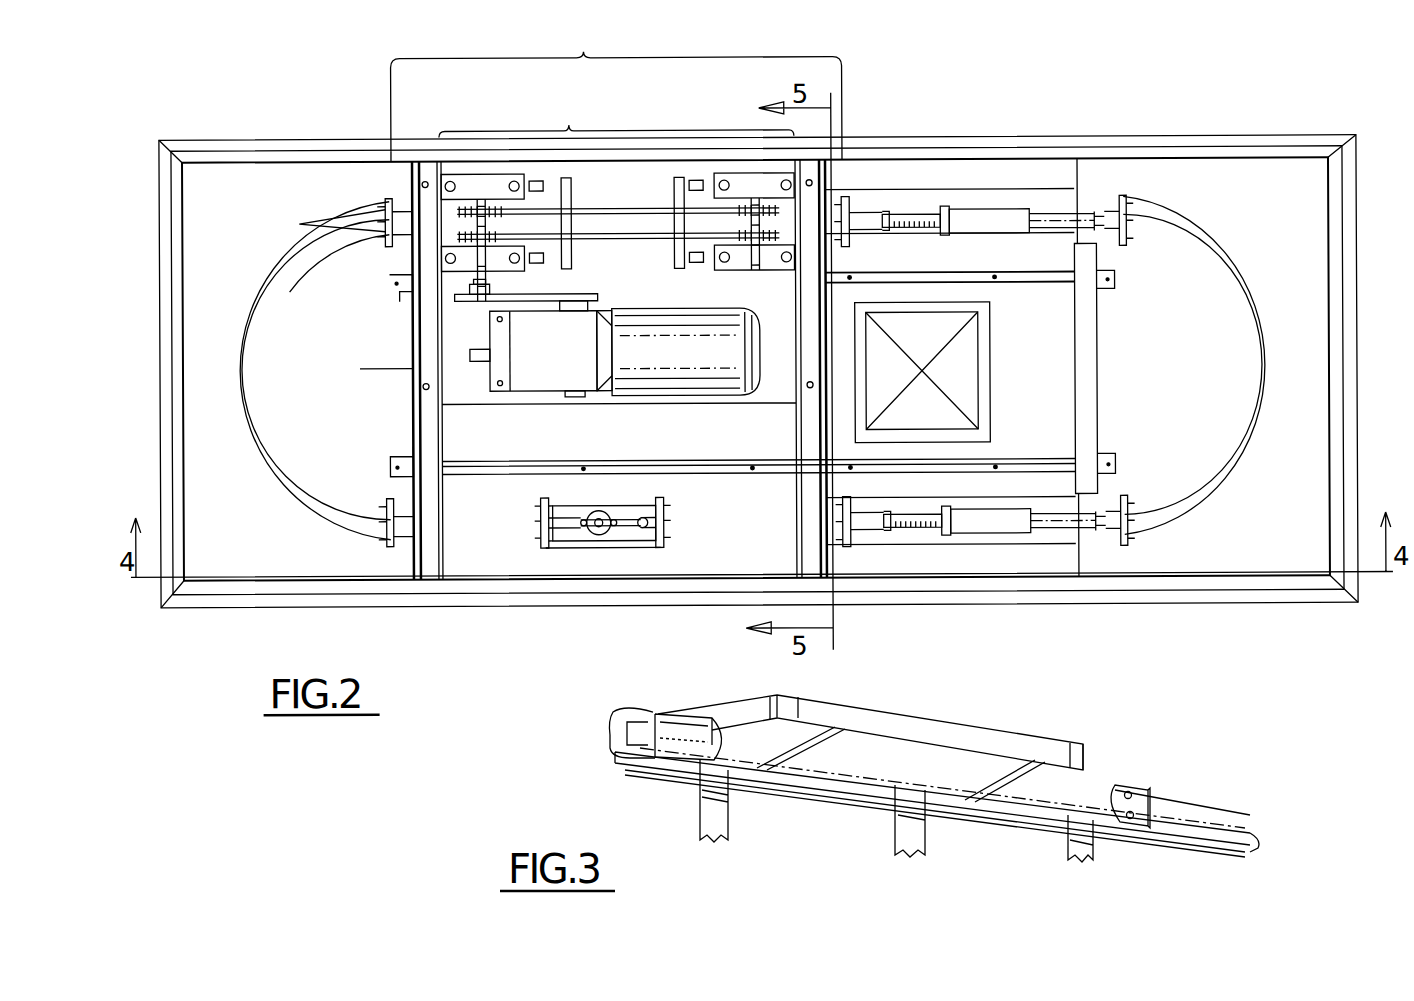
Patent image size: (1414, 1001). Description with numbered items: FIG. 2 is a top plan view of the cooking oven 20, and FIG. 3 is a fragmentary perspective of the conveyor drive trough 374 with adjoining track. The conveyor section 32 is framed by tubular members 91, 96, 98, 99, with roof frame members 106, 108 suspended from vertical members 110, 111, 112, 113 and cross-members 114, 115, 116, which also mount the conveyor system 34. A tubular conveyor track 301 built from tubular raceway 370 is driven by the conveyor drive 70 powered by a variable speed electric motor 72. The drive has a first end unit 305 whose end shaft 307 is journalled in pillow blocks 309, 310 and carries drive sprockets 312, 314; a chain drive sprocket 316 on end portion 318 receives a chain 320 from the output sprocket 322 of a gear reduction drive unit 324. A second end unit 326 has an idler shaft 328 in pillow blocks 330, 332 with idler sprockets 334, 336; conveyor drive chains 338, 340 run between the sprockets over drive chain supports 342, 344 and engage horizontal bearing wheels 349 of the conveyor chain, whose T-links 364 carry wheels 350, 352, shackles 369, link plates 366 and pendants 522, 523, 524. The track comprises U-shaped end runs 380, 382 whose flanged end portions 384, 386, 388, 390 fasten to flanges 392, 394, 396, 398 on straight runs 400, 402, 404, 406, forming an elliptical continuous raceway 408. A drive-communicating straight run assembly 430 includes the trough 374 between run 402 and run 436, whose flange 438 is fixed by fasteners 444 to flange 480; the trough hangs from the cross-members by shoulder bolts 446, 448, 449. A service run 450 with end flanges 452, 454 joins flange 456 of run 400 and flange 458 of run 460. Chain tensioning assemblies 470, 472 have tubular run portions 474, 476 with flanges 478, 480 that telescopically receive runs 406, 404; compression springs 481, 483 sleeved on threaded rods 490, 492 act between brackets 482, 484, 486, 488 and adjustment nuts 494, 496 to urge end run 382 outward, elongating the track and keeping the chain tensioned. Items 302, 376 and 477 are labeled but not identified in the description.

In FIG. 2, the cooking oven 20 is at (1404, 59).
In FIG. 2, the conveyor section 32 is at (160, 168).
In FIG. 2, the conveyor system 34 is at (322, 160).
In FIG. 3, the conveyor system 34 is at (695, 704).
In FIG. 2, the conveyor drive system 70 is at (616, 116).
In FIG. 2, the variable speed electric motor 72 is at (700, 356).
In FIG. 2, the tubular member 91 is at (172, 375).
In FIG. 2, the tubular member 96 is at (1340, 305).
In FIG. 2, the tubular member 98 is at (270, 597).
In FIG. 2, the tubular member 99 is at (200, 148).
In FIG. 2, the roof frame member 106 is at (826, 393).
In FIG. 2, the roof frame member 108 is at (975, 283).
In FIG. 2, the vertical member 110 is at (398, 452).
In FIG. 2, the vertical member 111 is at (1112, 455).
In FIG. 2, the vertical member 112 is at (1115, 290).
In FIG. 2, the vertical member 113 is at (400, 292).
In FIG. 2, the cross-member 114 is at (365, 372).
In FIG. 2, the cross-member 115 is at (798, 488).
In FIG. 2, the cross-member 116 is at (1090, 340).
In FIG. 2, the tubular conveyor track 301 is at (245, 285).
In FIG. 2, the center panel 302 is at (630, 480).
In FIG. 2, the first end unit 305 is at (512, 172).
In FIG. 2, the end shaft 307 is at (480, 175).
In FIG. 2, the pillow block 309 is at (530, 175).
In FIG. 2, the pillow block 310 is at (550, 232).
In FIG. 2, the drive sprocket 312 is at (395, 240).
In FIG. 2, the drive sprocket 314 is at (385, 240).
In FIG. 2, the chain drive sprocket 316 is at (468, 293).
In FIG. 2, the end portion 318 is at (478, 294).
In FIG. 2, the chain 320 is at (533, 349).
In FIG. 2, the output sprocket 322 is at (598, 296).
In FIG. 2, the gear reduction drive unit 324 is at (548, 392).
In FIG. 2, the second end unit 326 is at (752, 172).
In FIG. 2, the idler shaft 328 is at (685, 262).
In FIG. 2, the pillow block 330 is at (700, 175).
In FIG. 2, the pillow block 332 is at (730, 272).
In FIG. 2, the idler sprocket 334 is at (905, 215).
In FIG. 2, the idler sprocket 336 is at (850, 210).
In FIG. 2, the conveyor drive chain 338 is at (585, 205).
In FIG. 2, the conveyor drive chain 340 is at (625, 240).
In FIG. 2, the drive chain support 342 is at (590, 175).
In FIG. 2, the drive chain support 344 is at (680, 178).
In FIG. 2, the horizontal conveyor chain bearing wheel 349 is at (600, 510).
In FIG. 2, the wheel 350 is at (630, 540).
In FIG. 2, the wheel 352 is at (648, 512).
In FIG. 2, the T-link 364 is at (560, 540).
In FIG. 2, the link plate 366 is at (582, 540).
In FIG. 2, the shackle 369 is at (575, 515).
In FIG. 3, the tubular raceway 370 is at (655, 725).
In FIG. 3, the conveyor drive trough 374 is at (970, 730).
In FIG. 2, the track end 376 is at (397, 160).
In FIG. 2, the U-shaped end run 380 is at (270, 482).
In FIG. 2, the U-shaped end run 382 is at (1215, 248).
In FIG. 2, the flanged end portion 384 is at (386, 520).
In FIG. 2, the flanged end portion 386 is at (386, 205).
In FIG. 2, the flanged end portion 388 is at (1128, 200).
In FIG. 2, the flanged end portion 390 is at (1135, 520).
In FIG. 2, the complementary flange 392 is at (395, 545).
In FIG. 2, the complementary flange 394 is at (396, 205).
In FIG. 2, the complementary flange 396 is at (1125, 197).
In FIG. 2, the complementary flange 398 is at (1130, 540).
In FIG. 2, the straight tubular track run 400 is at (440, 570).
In FIG. 2, the straight tubular track run 402 is at (392, 245).
In FIG. 3, the straight tubular track run 402 is at (695, 715).
In FIG. 2, the straight tubular track run 404 is at (1120, 245).
In FIG. 2, the straight tubular track run 406 is at (1124, 497).
In FIG. 3, the elliptical continuous raceway 408 is at (608, 748).
In FIG. 2, the drive-communicating straight run assembly 430 is at (616, 93).
In FIG. 3, the additional straight run portion 436 is at (1090, 795).
In FIG. 2, the flange 438 is at (785, 310).
In FIG. 2, the fasteners 444 is at (1193, 210).
In FIG. 2, the shoulder bolt 446 is at (426, 385).
In FIG. 2, the shoulder bolt 448 is at (426, 180).
In FIG. 2, the shoulder bolt 449 is at (810, 180).
In FIG. 2, the service opening straight run portion 450 is at (602, 540).
In FIG. 2, the end flange 452 is at (542, 497).
In FIG. 2, the end flange 454 is at (665, 497).
In FIG. 2, the flange 456 is at (545, 517).
In FIG. 2, the flange 458 is at (660, 540).
In FIG. 2, the straight run portion 460 is at (730, 540).
In FIG. 2, the straight run chain tensioning assembly 470 is at (940, 535).
In FIG. 2, the straight run chain tensioning assembly 472 is at (925, 215).
In FIG. 2, the tubular straight run portion 474 is at (905, 530).
In FIG. 2, the tubular straight run portion 476 is at (980, 236).
In FIG. 2, the hole 477 is at (810, 385).
In FIG. 2, the flange 478 is at (850, 497).
In FIG. 2, the flange 480 is at (848, 245).
In FIG. 2, the compression spring 481 is at (990, 500).
In FIG. 2, the bracket 482 is at (880, 530).
In FIG. 2, the compression spring 483 is at (1060, 212).
In FIG. 2, the bracket 484 is at (1090, 512).
In FIG. 2, the bracket 486 is at (950, 170).
In FIG. 2, the bracket 488 is at (1123, 197).
In FIG. 2, the threaded rod 490 is at (900, 515).
In FIG. 2, the threaded rod 492 is at (965, 210).
In FIG. 2, the adjustment nut 494 is at (920, 535).
In FIG. 2, the adjustment nut 496 is at (1030, 210).
In FIG. 3, the conveyor pendant 522 is at (727, 830).
In FIG. 3, the conveyor pendant 523 is at (895, 848).
In FIG. 3, the conveyor pendant 524 is at (1068, 858).